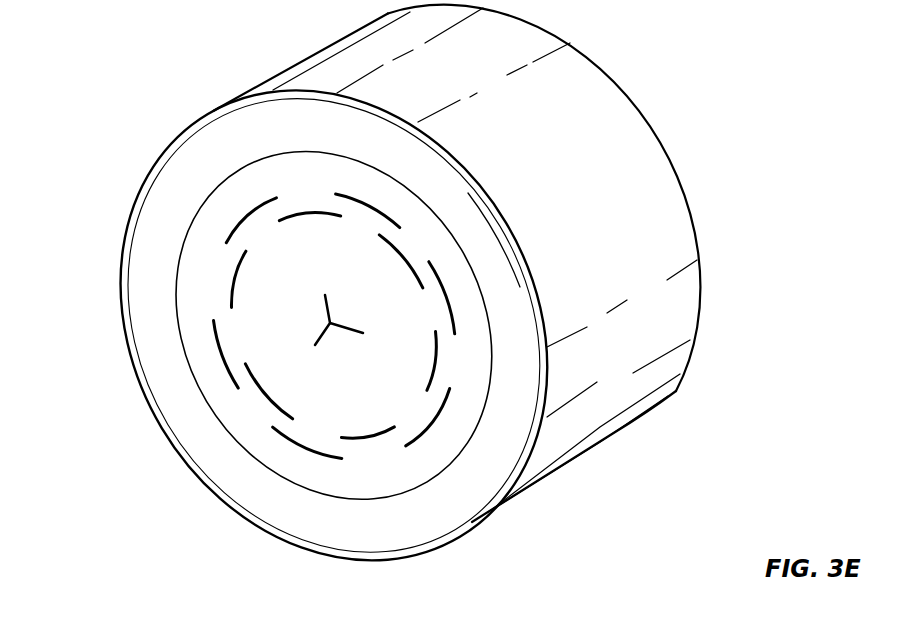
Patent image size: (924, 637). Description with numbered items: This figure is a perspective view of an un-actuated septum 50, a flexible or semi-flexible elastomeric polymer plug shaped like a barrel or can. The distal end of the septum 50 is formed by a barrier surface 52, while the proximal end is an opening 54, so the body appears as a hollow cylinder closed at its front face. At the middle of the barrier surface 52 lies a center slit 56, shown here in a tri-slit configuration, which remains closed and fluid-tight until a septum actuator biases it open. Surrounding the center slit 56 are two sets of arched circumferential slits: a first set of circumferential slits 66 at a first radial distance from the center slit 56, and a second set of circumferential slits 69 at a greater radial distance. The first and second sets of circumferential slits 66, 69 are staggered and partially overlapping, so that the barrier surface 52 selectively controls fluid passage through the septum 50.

The septum 50 is at (623, 400).
The barrier surface 52 is at (452, 422).
The opening 54 is at (620, 110).
The center slit 56 is at (330, 347).
The first set of circumferential slits 66 is at (403, 253).
The second set of circumferential slits 69 is at (257, 208).